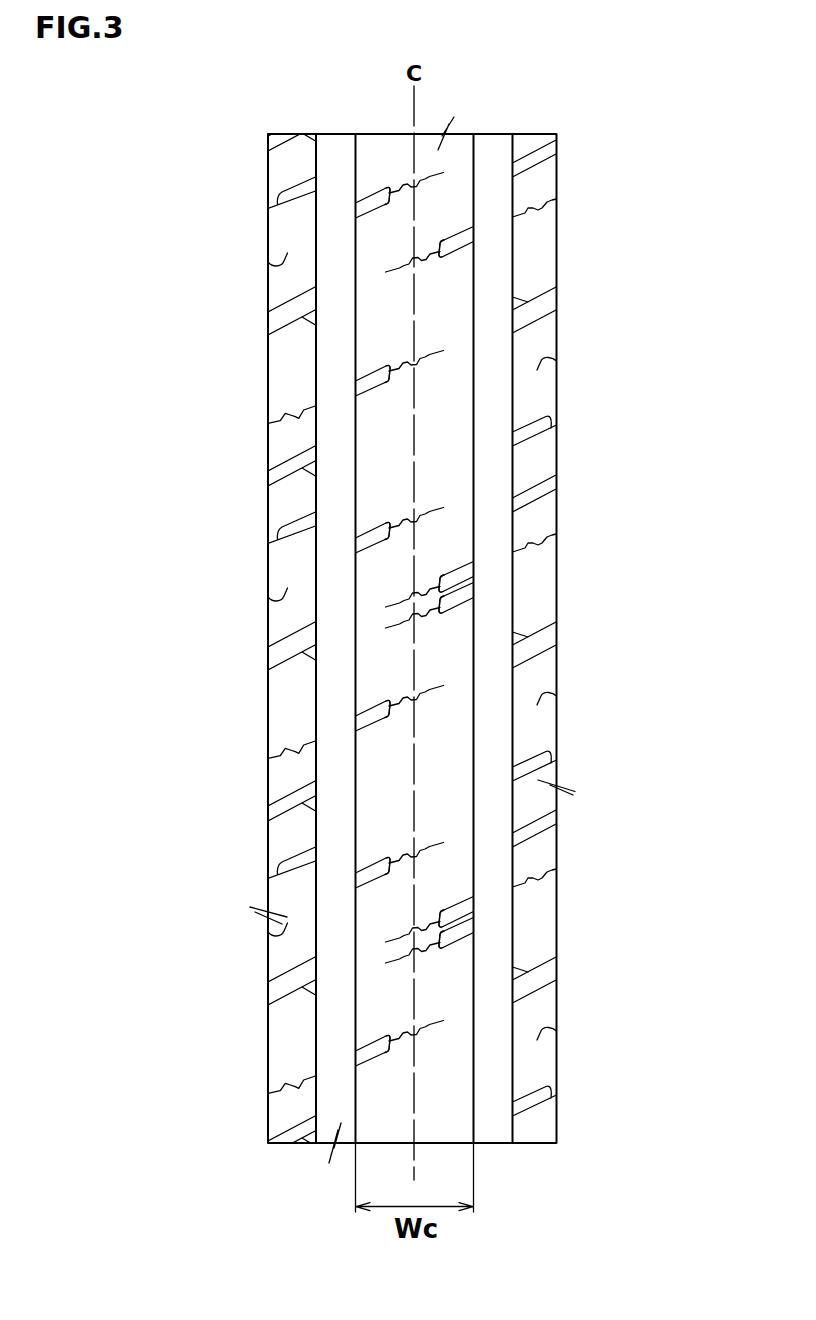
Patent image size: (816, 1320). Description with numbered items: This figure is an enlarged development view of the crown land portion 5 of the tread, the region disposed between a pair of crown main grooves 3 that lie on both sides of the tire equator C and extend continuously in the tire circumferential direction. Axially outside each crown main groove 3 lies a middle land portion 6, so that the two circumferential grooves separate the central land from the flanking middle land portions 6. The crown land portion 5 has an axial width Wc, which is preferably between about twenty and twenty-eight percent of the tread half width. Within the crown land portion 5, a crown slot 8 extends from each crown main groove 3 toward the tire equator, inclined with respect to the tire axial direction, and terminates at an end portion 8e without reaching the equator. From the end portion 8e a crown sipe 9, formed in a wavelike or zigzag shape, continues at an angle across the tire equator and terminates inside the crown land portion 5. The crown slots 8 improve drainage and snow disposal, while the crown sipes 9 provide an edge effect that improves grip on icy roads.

The crown main groove 3 is at (323, 251).
The crown land portion 5 is at (415, 676).
The middle land portion 6 is at (270, 716).
The crown slot 8 is at (457, 420).
The end portion 8e is at (438, 430).
The crown sipe 9 is at (423, 440).